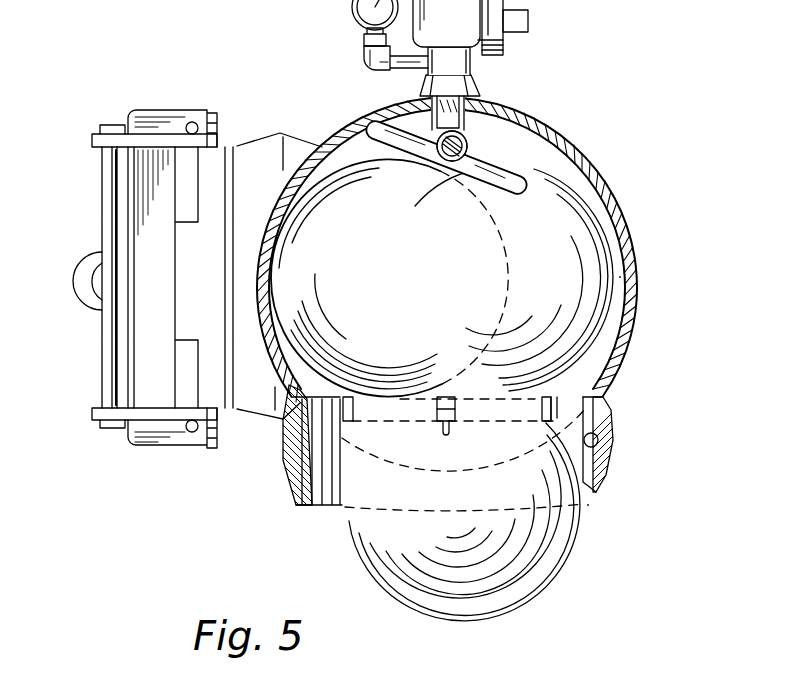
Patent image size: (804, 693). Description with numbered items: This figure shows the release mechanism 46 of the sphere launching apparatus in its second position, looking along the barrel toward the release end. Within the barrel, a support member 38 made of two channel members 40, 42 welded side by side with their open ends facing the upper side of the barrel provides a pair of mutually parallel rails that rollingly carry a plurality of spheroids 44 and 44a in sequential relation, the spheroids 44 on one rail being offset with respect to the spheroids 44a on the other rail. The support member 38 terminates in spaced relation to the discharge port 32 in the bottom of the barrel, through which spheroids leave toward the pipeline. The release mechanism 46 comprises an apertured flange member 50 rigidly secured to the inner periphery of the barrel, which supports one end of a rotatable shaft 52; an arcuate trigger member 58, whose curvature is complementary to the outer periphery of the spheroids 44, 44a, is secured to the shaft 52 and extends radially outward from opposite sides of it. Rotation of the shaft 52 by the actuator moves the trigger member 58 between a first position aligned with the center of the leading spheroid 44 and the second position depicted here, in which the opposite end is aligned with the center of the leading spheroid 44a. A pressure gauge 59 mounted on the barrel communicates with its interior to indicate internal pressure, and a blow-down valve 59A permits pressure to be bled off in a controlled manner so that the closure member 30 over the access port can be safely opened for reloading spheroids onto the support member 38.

The closure member 30 is at (100, 314).
The discharge port 32 is at (584, 457).
The support member 38 is at (556, 400).
The channel member 40 is at (407, 428).
The channel member 42 is at (490, 428).
The spheroid 44 is at (323, 208).
The spheroid 44a is at (572, 232).
The release mechanism 46 is at (464, 139).
The apertured flange member 50 is at (416, 118).
The rotatable shaft 52 is at (440, 153).
The arcuate trigger member 58 is at (482, 157).
The pressure gauge 59 is at (350, 16).
The blow-down valve 59A is at (500, 46).